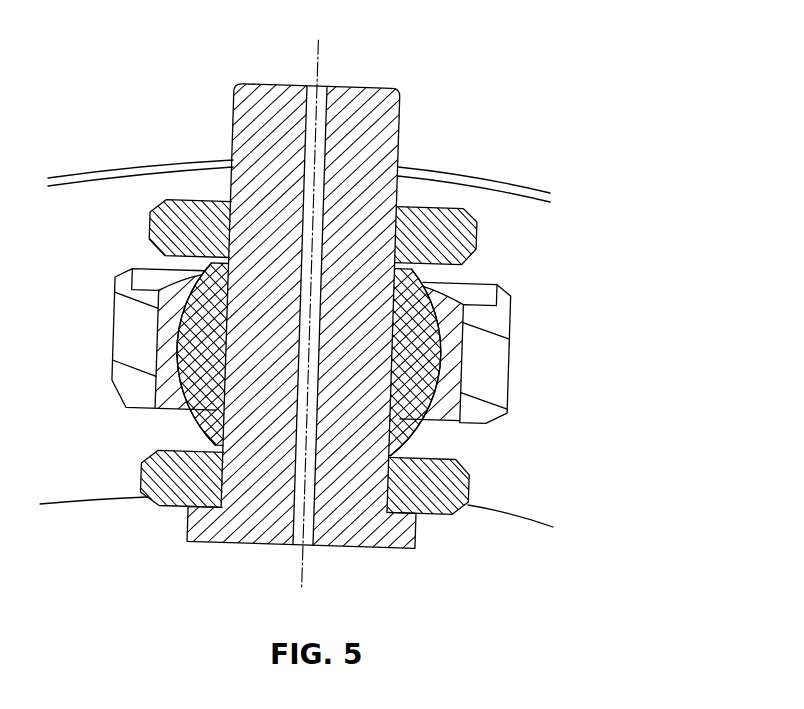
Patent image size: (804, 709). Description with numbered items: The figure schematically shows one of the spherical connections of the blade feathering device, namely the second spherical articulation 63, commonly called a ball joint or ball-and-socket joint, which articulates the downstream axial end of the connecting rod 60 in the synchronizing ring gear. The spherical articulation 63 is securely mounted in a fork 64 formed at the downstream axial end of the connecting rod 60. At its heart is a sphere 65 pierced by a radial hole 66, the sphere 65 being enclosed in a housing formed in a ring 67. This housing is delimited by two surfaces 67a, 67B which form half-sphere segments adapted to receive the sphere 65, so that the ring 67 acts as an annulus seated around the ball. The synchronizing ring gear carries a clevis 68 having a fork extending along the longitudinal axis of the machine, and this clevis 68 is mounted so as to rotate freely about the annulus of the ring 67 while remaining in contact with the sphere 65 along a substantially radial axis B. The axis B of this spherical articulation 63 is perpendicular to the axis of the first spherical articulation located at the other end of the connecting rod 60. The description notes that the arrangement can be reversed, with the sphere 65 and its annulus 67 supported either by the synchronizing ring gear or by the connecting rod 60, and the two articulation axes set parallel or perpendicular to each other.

The connecting rod 60 is at (177, 227).
The spherical articulation 63 is at (605, 212).
The fork 64 is at (413, 490).
The sphere 65 is at (428, 294).
The radial hole 66 is at (392, 318).
The ring 67 is at (168, 340).
The surface 67a is at (190, 384).
The surface 67B is at (425, 399).
The clevis 68 is at (487, 343).
The radial axis B is at (302, 582).